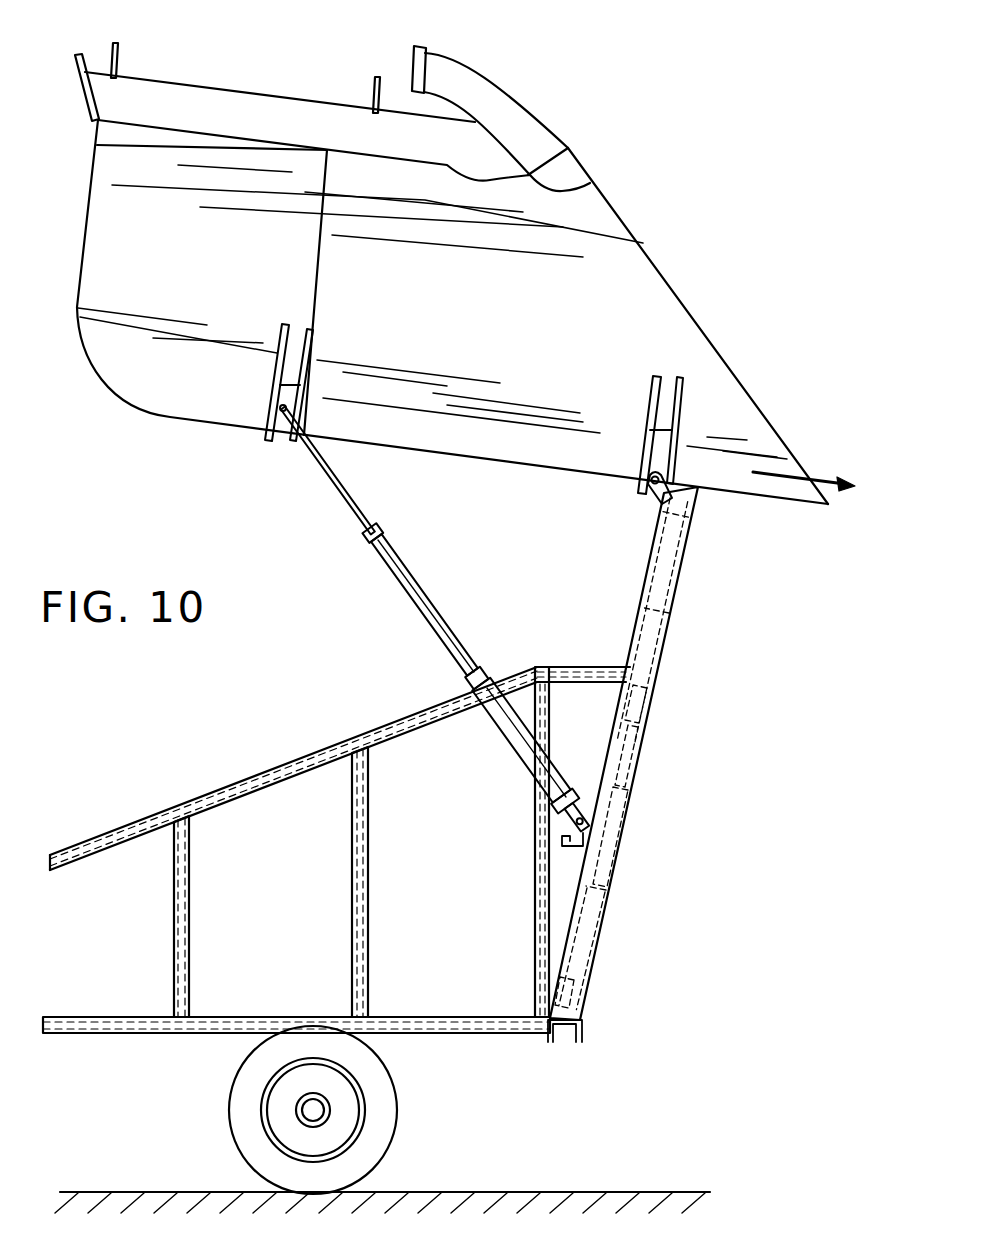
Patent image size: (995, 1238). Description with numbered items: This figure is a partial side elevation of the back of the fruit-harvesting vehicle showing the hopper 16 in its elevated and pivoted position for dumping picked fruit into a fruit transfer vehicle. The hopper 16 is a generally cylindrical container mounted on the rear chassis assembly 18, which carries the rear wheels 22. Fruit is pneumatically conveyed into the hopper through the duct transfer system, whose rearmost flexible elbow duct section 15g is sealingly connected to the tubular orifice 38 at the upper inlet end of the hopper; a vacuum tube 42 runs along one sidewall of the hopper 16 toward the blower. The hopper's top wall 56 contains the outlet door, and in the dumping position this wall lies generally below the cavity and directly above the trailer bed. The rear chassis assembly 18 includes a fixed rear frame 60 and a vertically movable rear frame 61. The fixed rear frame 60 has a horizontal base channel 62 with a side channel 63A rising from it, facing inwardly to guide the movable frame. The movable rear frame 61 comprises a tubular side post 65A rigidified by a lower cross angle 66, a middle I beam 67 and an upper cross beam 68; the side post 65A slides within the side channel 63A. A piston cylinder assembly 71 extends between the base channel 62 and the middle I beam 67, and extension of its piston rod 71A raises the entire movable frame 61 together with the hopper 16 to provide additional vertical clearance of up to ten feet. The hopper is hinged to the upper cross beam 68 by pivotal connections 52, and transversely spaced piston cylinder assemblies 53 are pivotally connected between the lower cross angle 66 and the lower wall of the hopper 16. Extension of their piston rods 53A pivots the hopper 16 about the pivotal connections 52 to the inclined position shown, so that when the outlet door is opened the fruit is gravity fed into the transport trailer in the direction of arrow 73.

The hopper 16 is at (167, 395).
The vacuum tube 42 is at (240, 110).
The seventh flexible elbow duct section 15g is at (490, 88).
The tubular orifice 38 is at (570, 170).
The top wall 56 is at (636, 232).
The arrow 73 is at (800, 468).
The pivotal connections 52 is at (658, 497).
The piston rods 53A is at (397, 573).
The piston cylinder assemblies 53 is at (510, 726).
The lower cross angle 66 is at (565, 840).
The fixed rear frame 60 is at (633, 860).
The upper cross beam 68 is at (688, 507).
The tubular side post 65A is at (668, 568).
The movable rear frame 61 is at (666, 610).
The side channel 63A is at (660, 688).
The middle I beam 67 is at (653, 718).
The piston rod 71A is at (613, 813).
The piston cylinder assembly 71 is at (583, 945).
The base channel 62 is at (590, 1028).
The rear chassis assembly 18 is at (142, 1024).
The rear wheels 22 is at (380, 1110).